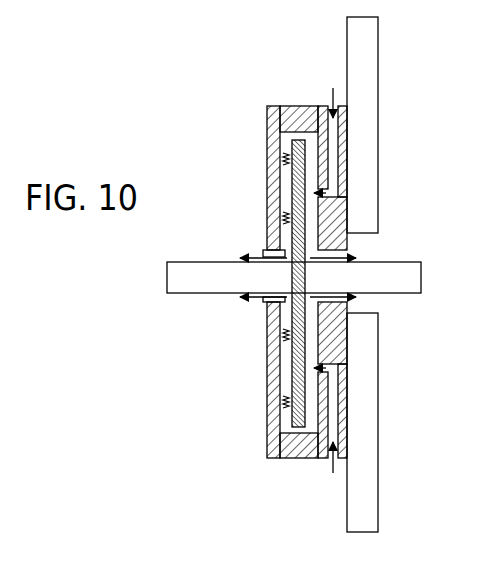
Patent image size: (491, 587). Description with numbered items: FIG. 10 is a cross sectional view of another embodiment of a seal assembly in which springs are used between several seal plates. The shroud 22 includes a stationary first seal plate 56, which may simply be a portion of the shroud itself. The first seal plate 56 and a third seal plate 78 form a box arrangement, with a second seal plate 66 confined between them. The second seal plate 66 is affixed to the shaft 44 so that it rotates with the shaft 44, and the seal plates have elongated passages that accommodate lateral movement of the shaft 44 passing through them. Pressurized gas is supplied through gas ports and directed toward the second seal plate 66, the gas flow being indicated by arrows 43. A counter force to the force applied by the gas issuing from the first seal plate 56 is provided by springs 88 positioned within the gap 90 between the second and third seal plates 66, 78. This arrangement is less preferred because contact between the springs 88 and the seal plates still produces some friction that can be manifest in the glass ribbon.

The shroud 22 is at (377, 68).
The gas flow arrows 43 is at (333, 88).
The shaft 44 is at (401, 262).
The first seal plate 56 is at (286, 127).
The second seal plate 66 is at (287, 420).
The third seal plate 78 is at (267, 134).
The springs 88 is at (286, 166).
The gap 90 is at (291, 238).